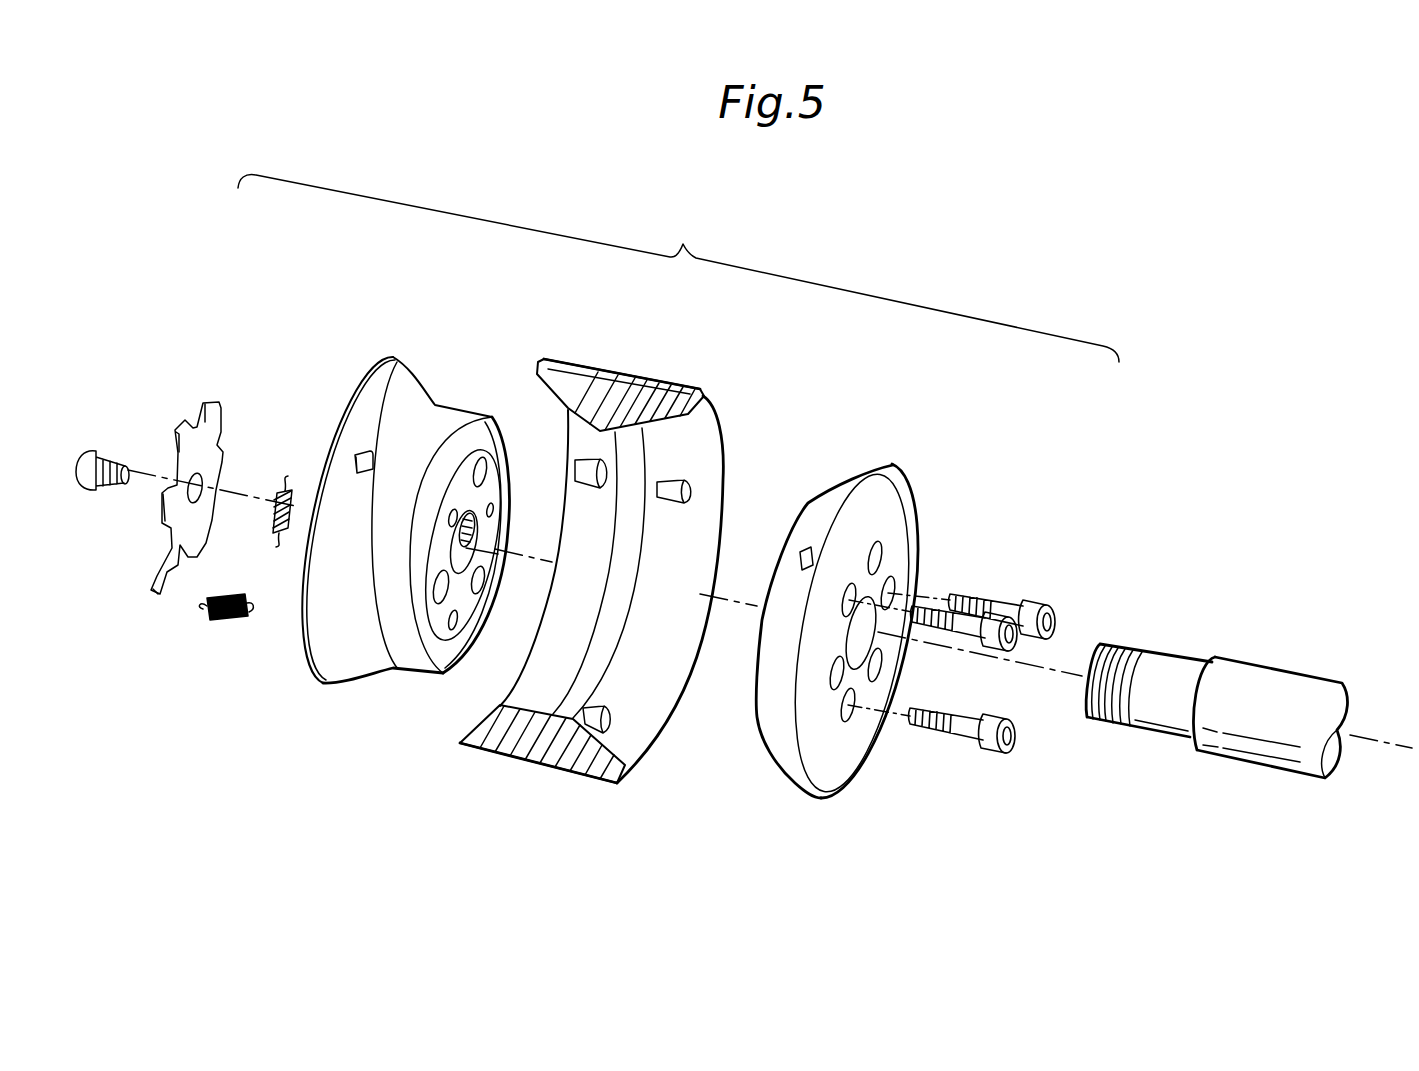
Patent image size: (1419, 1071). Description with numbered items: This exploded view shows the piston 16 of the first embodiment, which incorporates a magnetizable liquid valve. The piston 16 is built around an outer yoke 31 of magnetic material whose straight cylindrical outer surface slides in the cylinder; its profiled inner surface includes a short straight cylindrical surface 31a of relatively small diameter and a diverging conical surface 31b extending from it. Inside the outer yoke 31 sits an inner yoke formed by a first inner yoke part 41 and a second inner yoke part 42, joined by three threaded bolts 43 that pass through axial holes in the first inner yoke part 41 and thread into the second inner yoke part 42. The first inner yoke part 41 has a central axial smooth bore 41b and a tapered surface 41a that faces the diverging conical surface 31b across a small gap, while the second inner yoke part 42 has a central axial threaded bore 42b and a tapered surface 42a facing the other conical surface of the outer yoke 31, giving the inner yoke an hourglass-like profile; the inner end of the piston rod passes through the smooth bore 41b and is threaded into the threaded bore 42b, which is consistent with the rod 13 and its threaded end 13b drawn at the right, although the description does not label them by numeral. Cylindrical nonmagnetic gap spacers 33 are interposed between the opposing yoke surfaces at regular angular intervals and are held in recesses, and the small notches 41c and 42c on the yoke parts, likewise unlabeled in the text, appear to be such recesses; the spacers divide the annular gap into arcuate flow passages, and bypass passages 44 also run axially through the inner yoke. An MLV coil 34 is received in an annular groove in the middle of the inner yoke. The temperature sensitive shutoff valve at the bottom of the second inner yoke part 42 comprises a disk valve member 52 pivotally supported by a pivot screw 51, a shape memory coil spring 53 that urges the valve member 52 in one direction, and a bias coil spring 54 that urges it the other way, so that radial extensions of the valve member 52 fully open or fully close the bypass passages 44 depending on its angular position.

The drive shaft 13 is at (1216, 684).
The threaded portion of shaft 13b is at (1157, 662).
The piston 16 is at (678, 268).
The outer yoke 31 is at (623, 539).
The short straight cylindrical surface 31a is at (614, 618).
The diverging conical surface 31b is at (647, 713).
The gap spacer 33 is at (690, 490).
The MLV coil 34 is at (408, 668).
The first inner yoke part 41 is at (876, 590).
The tapered surface 41a is at (781, 747).
The central axial smooth bore 41b is at (867, 660).
The notch of cover plate 41c is at (805, 553).
The second inner yoke part 42 is at (436, 526).
The tapered surface 42a is at (339, 672).
The central axial threaded bore 42b is at (452, 640).
The notch of hub 42c is at (356, 455).
The bolts 43 is at (968, 742).
The bypass passage 44 is at (482, 462).
The pivot screw 51 is at (108, 455).
The disk valve member 52 is at (205, 402).
The shape memory coil spring 53 is at (279, 491).
The bias coil spring 54 is at (229, 621).